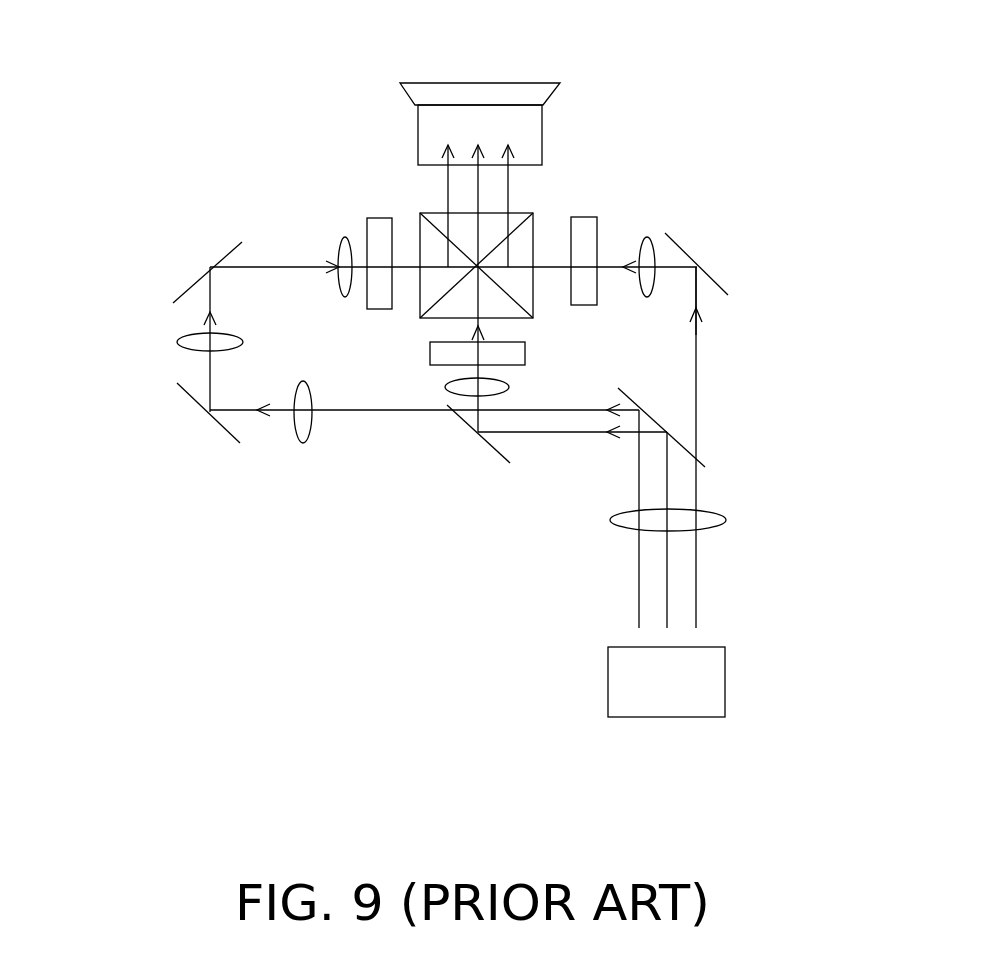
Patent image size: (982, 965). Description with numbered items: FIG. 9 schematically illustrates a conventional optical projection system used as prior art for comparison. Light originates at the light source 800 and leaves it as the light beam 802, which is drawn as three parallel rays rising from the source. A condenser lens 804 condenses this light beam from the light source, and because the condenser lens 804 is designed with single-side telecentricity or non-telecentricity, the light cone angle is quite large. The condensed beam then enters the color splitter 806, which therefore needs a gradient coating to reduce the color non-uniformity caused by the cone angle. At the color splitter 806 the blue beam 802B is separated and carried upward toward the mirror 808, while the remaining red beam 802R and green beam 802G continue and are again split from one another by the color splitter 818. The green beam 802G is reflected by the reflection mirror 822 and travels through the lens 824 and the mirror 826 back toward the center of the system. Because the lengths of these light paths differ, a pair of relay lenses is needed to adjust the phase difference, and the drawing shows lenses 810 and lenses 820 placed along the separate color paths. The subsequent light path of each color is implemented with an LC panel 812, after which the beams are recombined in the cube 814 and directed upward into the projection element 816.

The light source 800 is at (725, 673).
The light beams 802 is at (696, 592).
The blue light beam 802B is at (697, 355).
The green beam 802G is at (528, 410).
The red beam 802R is at (570, 435).
The condenser lens 804 is at (705, 527).
The color splitter 806 is at (696, 443).
The dichroic mirror 808 is at (707, 272).
The lens 810 is at (647, 233).
The LC panel 812 is at (578, 213).
The combining prism cube 814 is at (525, 212).
The projection lens 816 is at (528, 118).
The color splitter 818 is at (490, 450).
The lens 820 is at (447, 393).
The reflection mirror 822 is at (220, 432).
The lens 824 is at (177, 340).
The mirror 826 is at (222, 250).